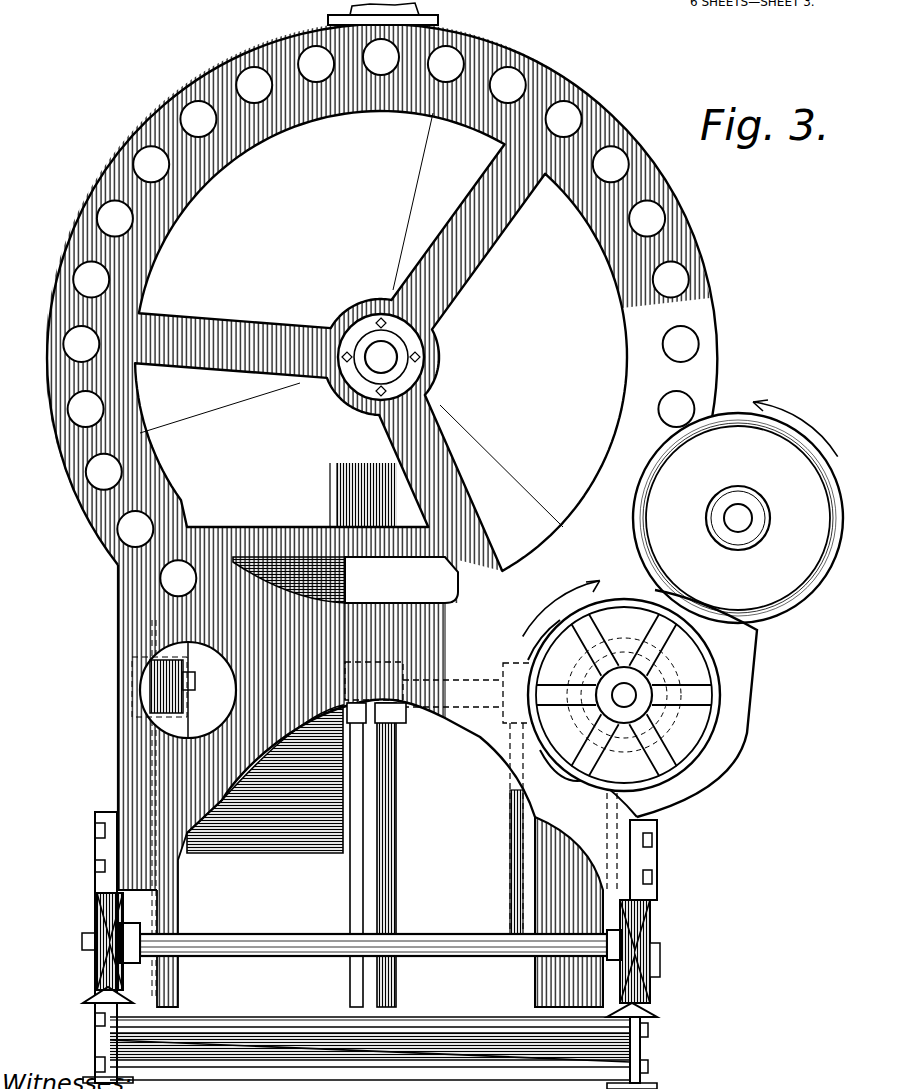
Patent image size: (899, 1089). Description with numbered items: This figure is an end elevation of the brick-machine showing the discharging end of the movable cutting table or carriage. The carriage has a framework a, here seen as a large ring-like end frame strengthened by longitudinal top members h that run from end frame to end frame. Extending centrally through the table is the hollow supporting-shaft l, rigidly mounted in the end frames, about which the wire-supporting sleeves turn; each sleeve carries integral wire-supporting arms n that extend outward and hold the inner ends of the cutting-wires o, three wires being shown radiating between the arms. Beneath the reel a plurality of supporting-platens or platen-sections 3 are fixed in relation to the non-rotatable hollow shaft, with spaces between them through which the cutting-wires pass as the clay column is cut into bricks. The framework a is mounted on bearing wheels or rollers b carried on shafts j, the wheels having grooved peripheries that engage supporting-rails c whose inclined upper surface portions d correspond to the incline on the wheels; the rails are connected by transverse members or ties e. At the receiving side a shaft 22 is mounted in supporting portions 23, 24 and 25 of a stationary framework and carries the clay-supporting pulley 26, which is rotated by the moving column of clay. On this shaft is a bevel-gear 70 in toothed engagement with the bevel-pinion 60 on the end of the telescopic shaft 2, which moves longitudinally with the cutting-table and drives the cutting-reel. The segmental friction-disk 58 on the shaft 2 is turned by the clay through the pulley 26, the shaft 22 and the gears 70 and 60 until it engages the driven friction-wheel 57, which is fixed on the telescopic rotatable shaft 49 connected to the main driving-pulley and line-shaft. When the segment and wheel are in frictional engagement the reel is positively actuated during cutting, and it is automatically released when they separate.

The framework a is at (381, 514).
The longitudinal top members h is at (350, 10).
The cutting-wires o is at (412, 206).
The wire-supporting arms n is at (392, 288).
The hollow supporting-shaft l is at (387, 364).
The supporting-platens or platen-sections 3 is at (345, 479).
The driven friction-wheel 57 is at (738, 511).
The telescopic rotatable shaft 49 is at (738, 518).
The segmental friction-disk 58 is at (621, 675).
The bevel-gear 70 is at (550, 627).
The bevel-pinion 60 is at (680, 667).
The shaft 2 is at (630, 695).
The supporting portion 25 is at (147, 677).
The shaft 22 is at (424, 673).
The supporting portion 23 is at (541, 790).
The supporting portion 24 is at (406, 724).
The clay-supporting pulley 26 is at (284, 846).
The shafts j is at (297, 937).
The bearing wheels or rollers b is at (107, 927).
The inclined upper surface portions d is at (98, 993).
The transverse members or ties e is at (268, 1017).
The supporting-rails c is at (107, 1043).